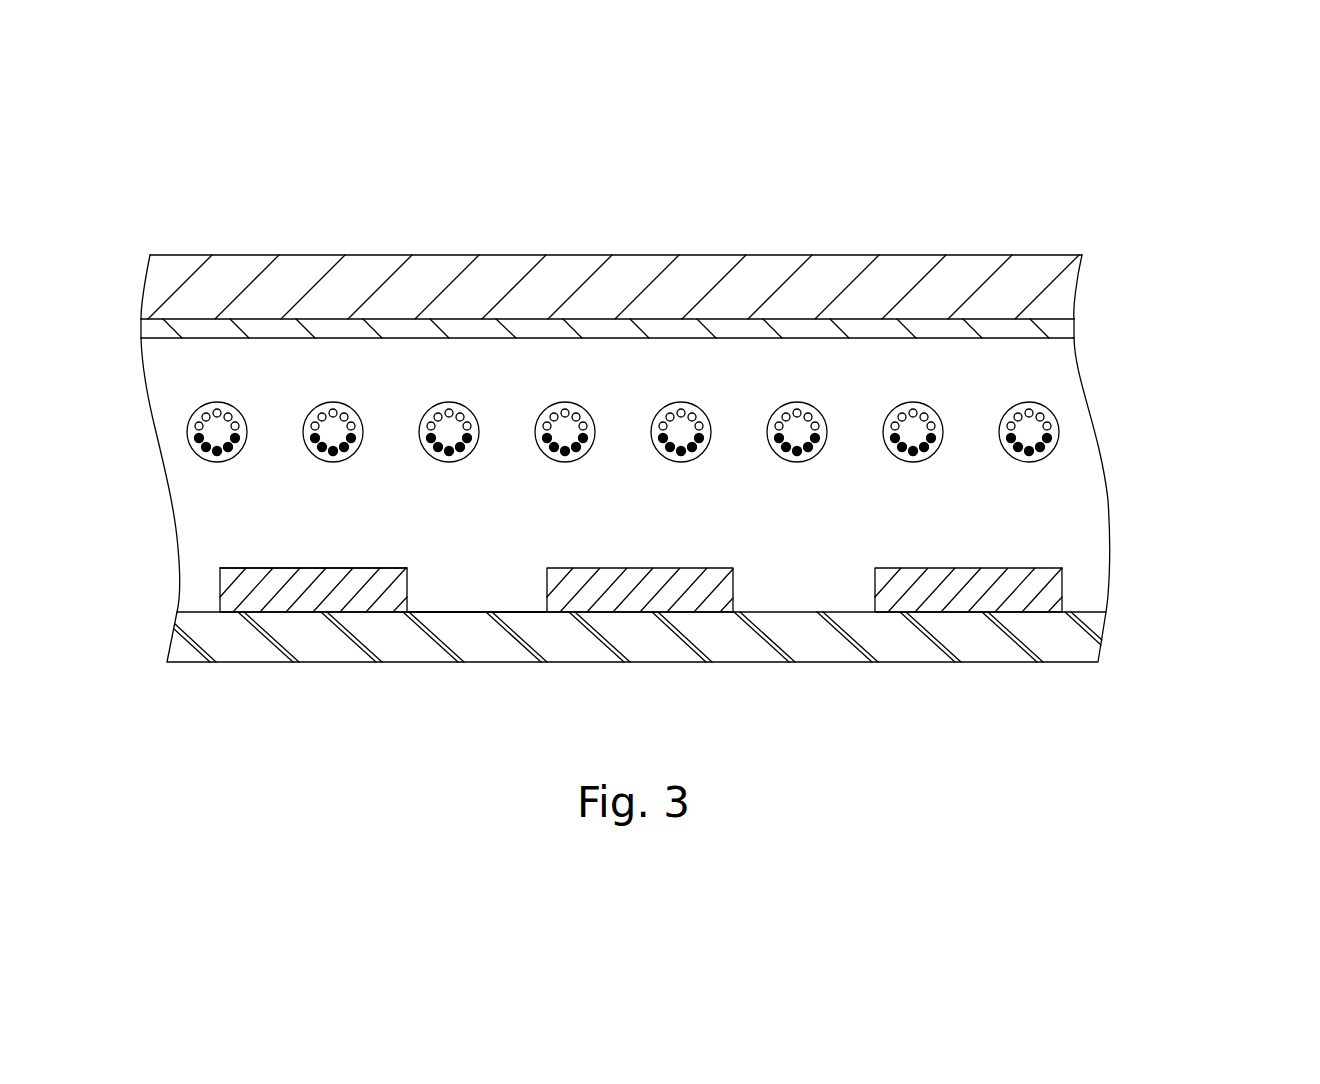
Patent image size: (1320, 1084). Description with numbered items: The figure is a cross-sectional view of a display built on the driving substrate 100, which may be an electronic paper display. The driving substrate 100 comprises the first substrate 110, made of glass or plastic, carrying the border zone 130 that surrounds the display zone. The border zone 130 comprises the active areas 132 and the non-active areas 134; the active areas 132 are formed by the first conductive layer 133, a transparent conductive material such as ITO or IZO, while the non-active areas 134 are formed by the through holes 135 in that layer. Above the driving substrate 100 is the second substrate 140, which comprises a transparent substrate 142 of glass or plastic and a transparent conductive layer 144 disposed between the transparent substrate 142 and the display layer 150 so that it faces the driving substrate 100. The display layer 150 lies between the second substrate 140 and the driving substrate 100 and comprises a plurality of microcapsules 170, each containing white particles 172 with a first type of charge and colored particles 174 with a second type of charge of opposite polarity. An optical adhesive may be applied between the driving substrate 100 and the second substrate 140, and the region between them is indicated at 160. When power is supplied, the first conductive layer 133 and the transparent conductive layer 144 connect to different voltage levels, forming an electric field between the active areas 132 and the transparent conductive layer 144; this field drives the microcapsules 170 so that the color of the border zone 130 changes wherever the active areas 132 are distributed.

The driving substrate 100 is at (732, 629).
The first substrate 110 is at (1045, 640).
The border zone 130 is at (723, 629).
The active areas 132 is at (407, 562).
The first conductive layer 133 is at (293, 600).
The non-active areas 134 is at (547, 562).
The through holes 135 is at (476, 592).
The second substrate 140 is at (702, 297).
The transparent substrate 142 is at (1062, 292).
The transparent conductive layer 144 is at (1062, 330).
The display layer 150 is at (712, 305).
The filling medium 160 is at (1070, 492).
The microcapsules 170 is at (727, 305).
The white particles 172 is at (653, 427).
The colored particles 174 is at (707, 437).